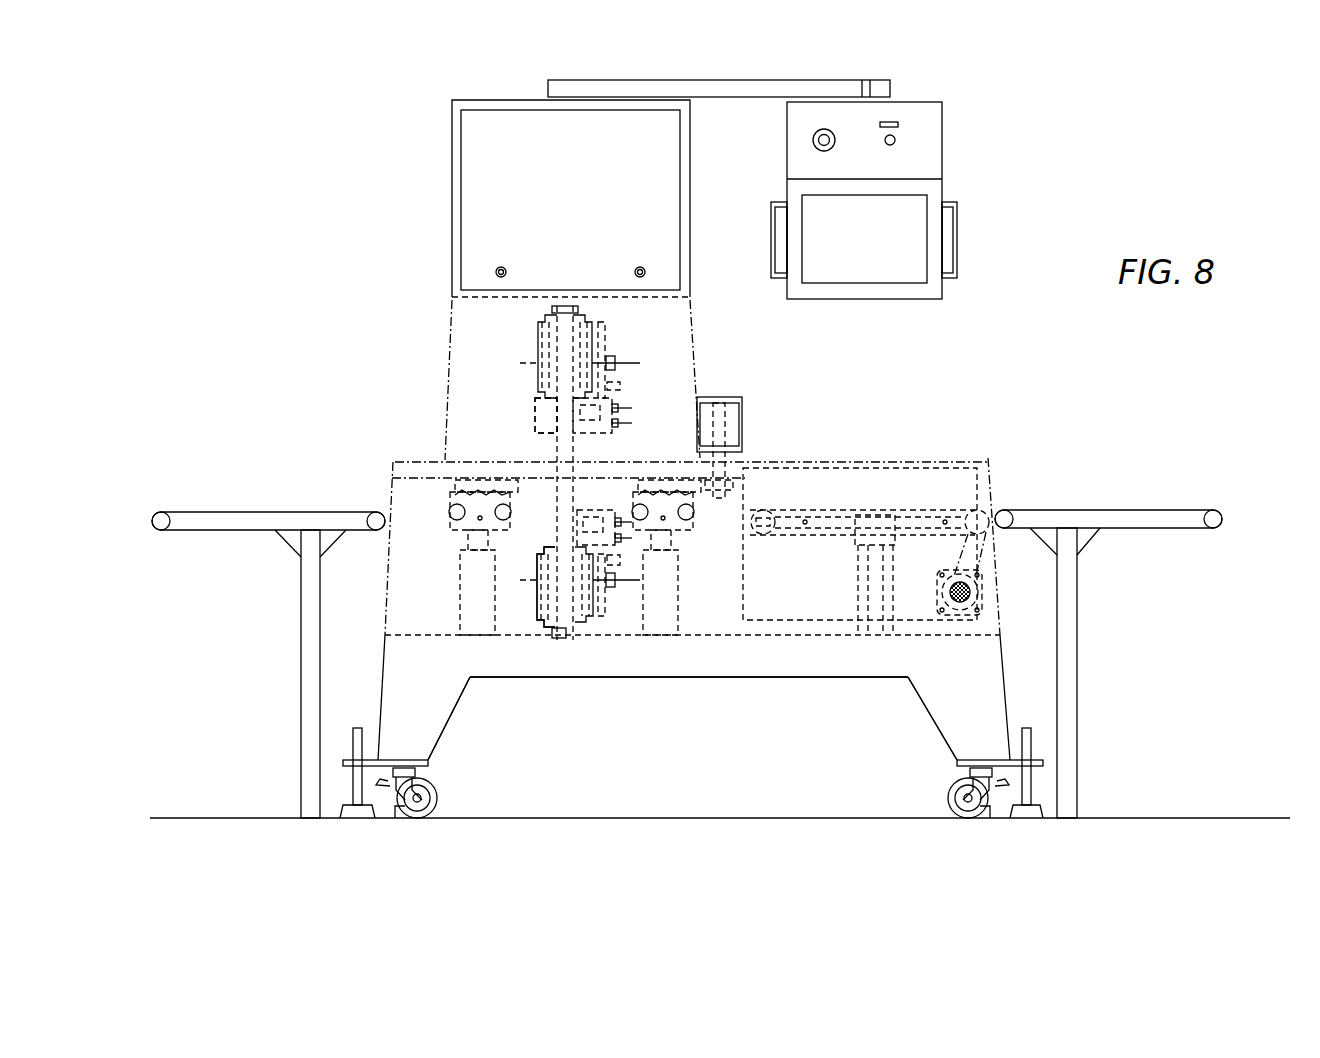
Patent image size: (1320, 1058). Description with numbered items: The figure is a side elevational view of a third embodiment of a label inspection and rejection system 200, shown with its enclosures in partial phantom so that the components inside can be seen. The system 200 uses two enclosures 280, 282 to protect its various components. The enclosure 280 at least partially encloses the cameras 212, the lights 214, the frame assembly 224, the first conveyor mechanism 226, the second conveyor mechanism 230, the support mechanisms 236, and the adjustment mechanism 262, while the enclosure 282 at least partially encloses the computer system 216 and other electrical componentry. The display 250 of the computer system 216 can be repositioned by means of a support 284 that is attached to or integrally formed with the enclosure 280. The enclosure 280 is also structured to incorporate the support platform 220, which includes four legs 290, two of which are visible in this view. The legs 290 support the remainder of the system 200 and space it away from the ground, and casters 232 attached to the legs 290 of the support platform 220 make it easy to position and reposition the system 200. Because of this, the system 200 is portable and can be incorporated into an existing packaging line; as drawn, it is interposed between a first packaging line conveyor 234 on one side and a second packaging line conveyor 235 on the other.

The label inspection and rejection system 200 is at (342, 194).
The cameras 212 is at (537, 348).
The lights 214 is at (540, 535).
The computer system 216 is at (950, 130).
The support platform 220 is at (787, 660).
The frame assembly 224 is at (567, 447).
The first conveyor mechanism 226 is at (690, 482).
The second conveyor mechanism 230 is at (918, 547).
The casters 232 is at (438, 804).
The first packaging line conveyor 234 is at (205, 536).
The second packaging line conveyor 235 is at (1124, 504).
The support mechanisms 236 is at (470, 595).
The display 250 is at (928, 237).
The adjustment mechanism 262 is at (870, 583).
The enclosure 280 is at (541, 682).
The enclosure 282 is at (494, 99).
The support 284 is at (729, 84).
The legs 290 is at (410, 717).